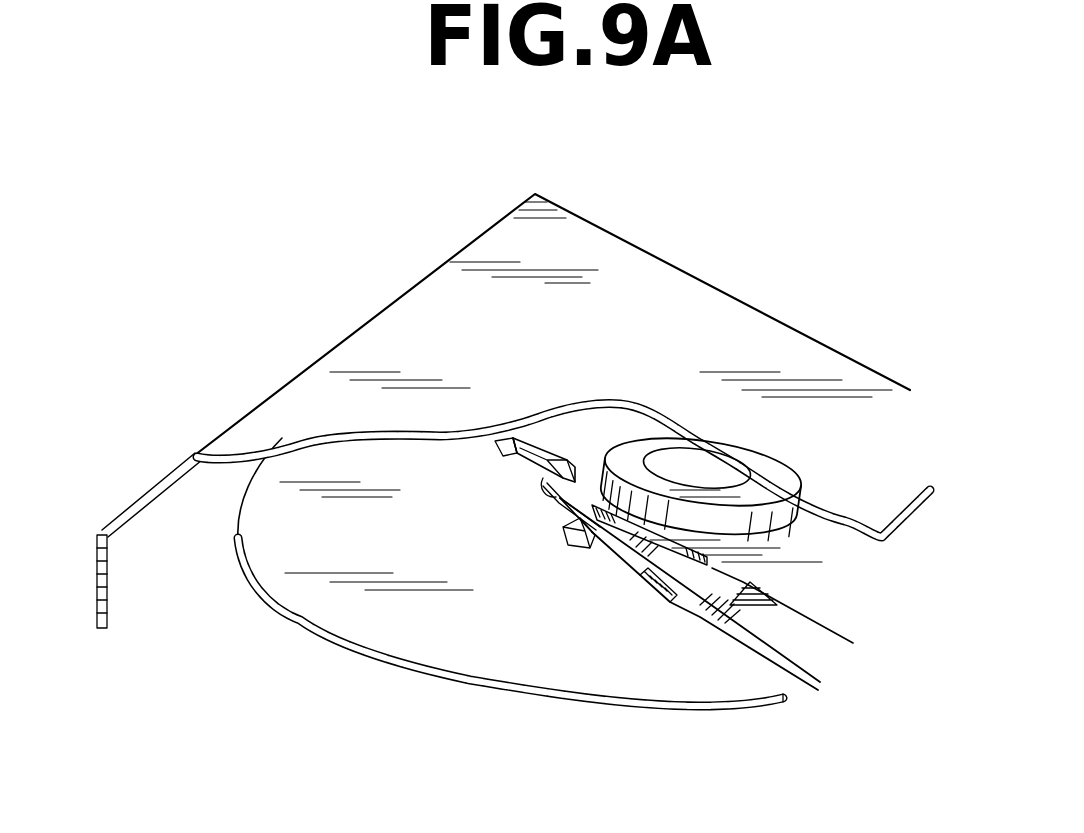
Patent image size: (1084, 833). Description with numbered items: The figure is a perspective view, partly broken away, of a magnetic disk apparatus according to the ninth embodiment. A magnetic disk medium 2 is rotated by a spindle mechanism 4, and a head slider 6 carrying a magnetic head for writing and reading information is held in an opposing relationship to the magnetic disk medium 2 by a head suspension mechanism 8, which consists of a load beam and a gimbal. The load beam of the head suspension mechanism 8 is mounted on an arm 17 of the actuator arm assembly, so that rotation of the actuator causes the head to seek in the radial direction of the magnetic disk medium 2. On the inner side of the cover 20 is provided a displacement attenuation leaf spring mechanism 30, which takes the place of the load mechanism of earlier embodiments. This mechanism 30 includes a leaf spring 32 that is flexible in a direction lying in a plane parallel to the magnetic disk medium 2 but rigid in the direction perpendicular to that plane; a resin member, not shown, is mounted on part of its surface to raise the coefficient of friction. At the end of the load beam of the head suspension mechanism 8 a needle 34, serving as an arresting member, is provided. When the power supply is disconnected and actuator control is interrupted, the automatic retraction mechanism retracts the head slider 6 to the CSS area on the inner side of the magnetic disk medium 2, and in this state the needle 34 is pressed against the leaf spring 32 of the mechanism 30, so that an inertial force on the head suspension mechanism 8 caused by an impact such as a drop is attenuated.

The magnetic disk medium 2 is at (307, 605).
The spindle mechanism 4 is at (743, 491).
The head slider 6 is at (566, 553).
The head suspension mechanism 8 is at (665, 598).
The arm 17 is at (803, 630).
The cover 20 is at (695, 285).
The displacement attenuation leaf spring mechanism 30 is at (562, 432).
The leaf spring 32 is at (520, 460).
The needle 34 is at (553, 507).